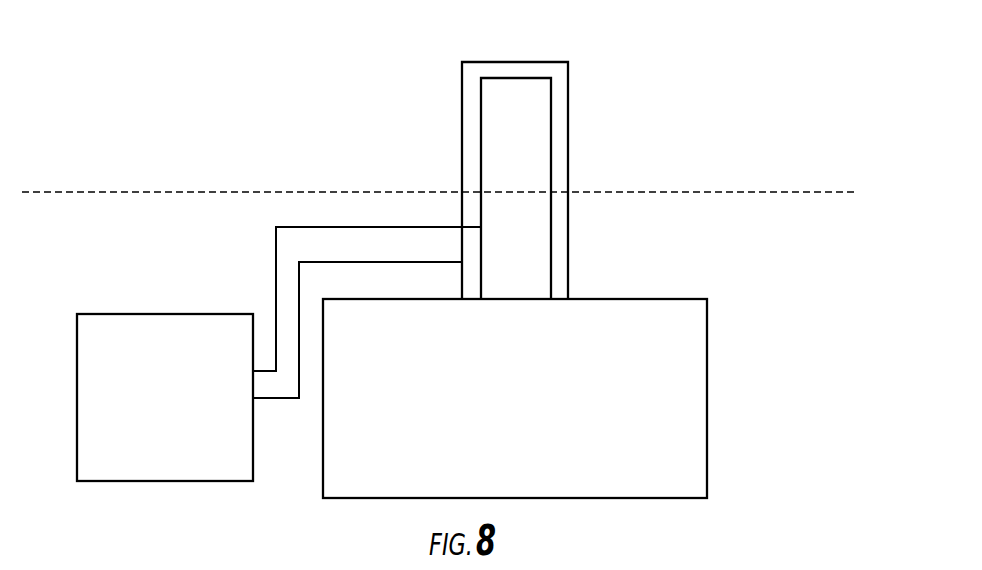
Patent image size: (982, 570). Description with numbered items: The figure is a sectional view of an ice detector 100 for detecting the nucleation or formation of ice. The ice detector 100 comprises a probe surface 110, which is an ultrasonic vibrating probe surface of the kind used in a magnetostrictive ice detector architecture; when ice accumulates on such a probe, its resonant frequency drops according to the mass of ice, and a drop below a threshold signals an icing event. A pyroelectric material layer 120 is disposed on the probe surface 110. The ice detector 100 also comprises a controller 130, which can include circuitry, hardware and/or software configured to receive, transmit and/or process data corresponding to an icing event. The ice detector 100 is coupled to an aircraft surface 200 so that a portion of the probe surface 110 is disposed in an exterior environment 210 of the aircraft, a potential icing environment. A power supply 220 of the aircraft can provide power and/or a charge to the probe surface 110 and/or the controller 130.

The ice detector 100 is at (428, 50).
The probe surface 110 is at (559, 132).
The pyroelectric material layer 120 is at (576, 78).
The controller 130 is at (531, 408).
The aircraft surface 200 is at (711, 182).
The exterior environment 210 is at (272, 130).
The power supply 220 is at (179, 408).